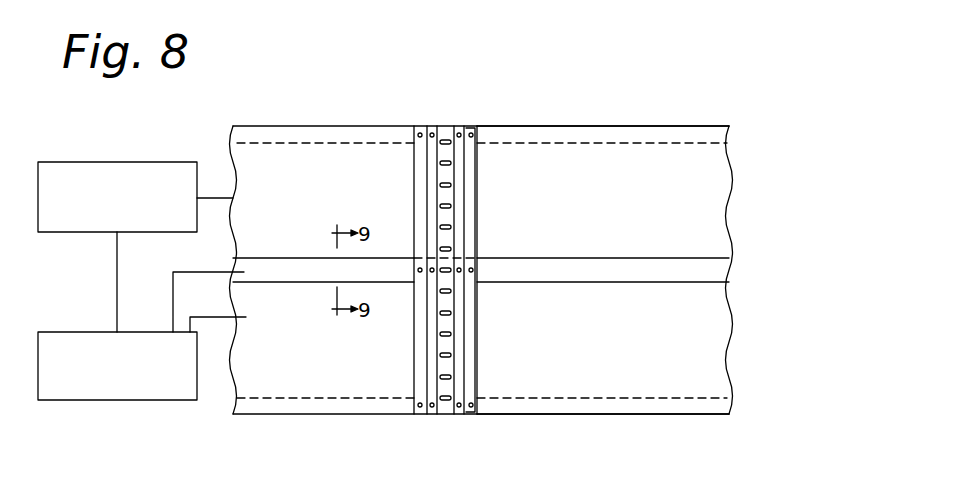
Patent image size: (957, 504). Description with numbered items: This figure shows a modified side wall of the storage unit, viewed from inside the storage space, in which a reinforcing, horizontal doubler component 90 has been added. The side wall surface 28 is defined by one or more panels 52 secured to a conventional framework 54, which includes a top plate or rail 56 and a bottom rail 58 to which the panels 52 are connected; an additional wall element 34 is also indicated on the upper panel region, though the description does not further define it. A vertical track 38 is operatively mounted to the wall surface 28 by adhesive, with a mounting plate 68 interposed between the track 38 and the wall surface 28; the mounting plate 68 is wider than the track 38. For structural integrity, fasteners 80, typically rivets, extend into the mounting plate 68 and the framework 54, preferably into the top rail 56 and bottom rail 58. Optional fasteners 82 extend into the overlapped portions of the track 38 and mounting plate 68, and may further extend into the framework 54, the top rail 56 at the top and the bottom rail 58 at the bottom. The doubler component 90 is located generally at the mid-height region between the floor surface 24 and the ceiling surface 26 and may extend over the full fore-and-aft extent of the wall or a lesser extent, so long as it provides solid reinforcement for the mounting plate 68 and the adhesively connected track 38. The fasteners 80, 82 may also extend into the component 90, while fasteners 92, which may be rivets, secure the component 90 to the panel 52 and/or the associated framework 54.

The floor surface 24 is at (582, 414).
The ceiling surface 26 is at (565, 128).
The side wall surface 28 is at (577, 210).
The panel skin 34 is at (662, 182).
The track 38 is at (450, 260).
The panel 52 is at (658, 325).
The framework 54 is at (106, 222).
The top plate or rail 56 is at (280, 127).
The bottom rail 58 is at (288, 405).
The mounting plate 68 is at (473, 182).
The fasteners 80 is at (417, 268).
The fasteners 82 is at (430, 139).
The reinforcing horizontal doubler component 90 is at (683, 275).
The fasteners 92 is at (106, 390).